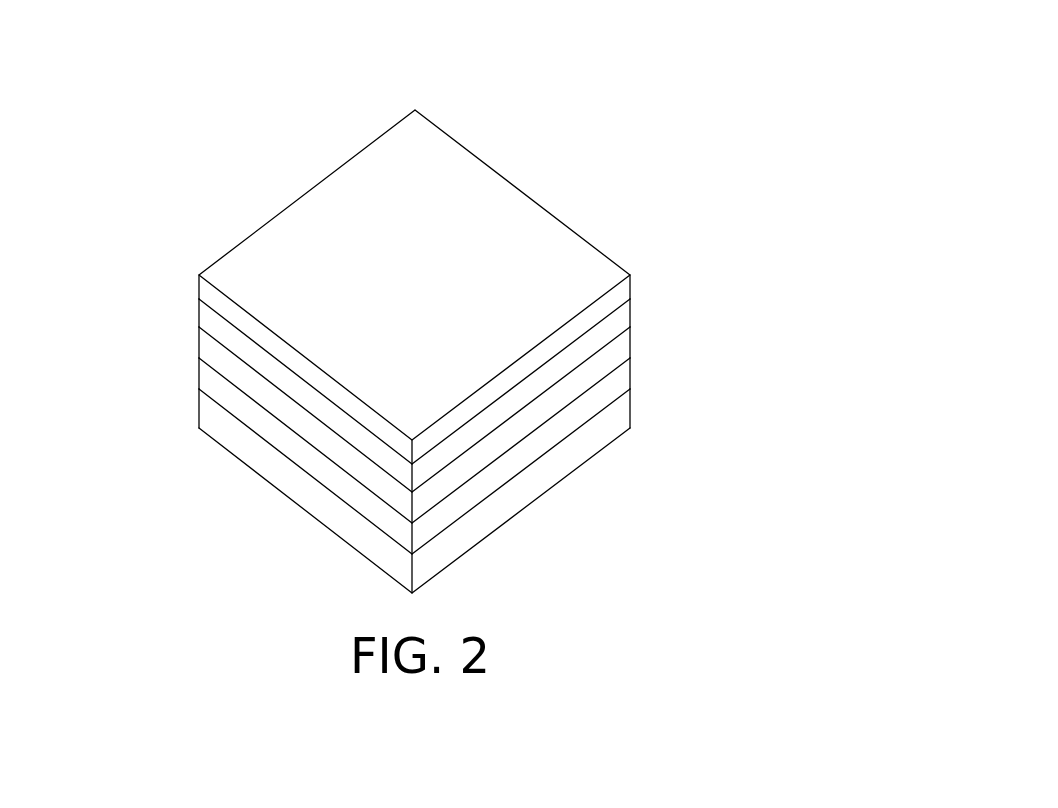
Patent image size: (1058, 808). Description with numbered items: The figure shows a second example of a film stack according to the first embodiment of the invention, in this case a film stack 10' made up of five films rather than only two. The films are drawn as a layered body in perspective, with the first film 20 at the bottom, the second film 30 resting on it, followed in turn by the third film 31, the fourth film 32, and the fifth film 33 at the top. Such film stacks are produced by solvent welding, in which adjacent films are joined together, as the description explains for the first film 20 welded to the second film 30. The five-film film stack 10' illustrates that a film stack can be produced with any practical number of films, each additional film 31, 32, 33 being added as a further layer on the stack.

The film stack 10' is at (374, 302).
The first film 20 is at (630, 414).
The second film 30 is at (630, 378).
The third film 31 is at (630, 345).
The fourth film 32 is at (630, 313).
The fifth film 33 is at (630, 283).